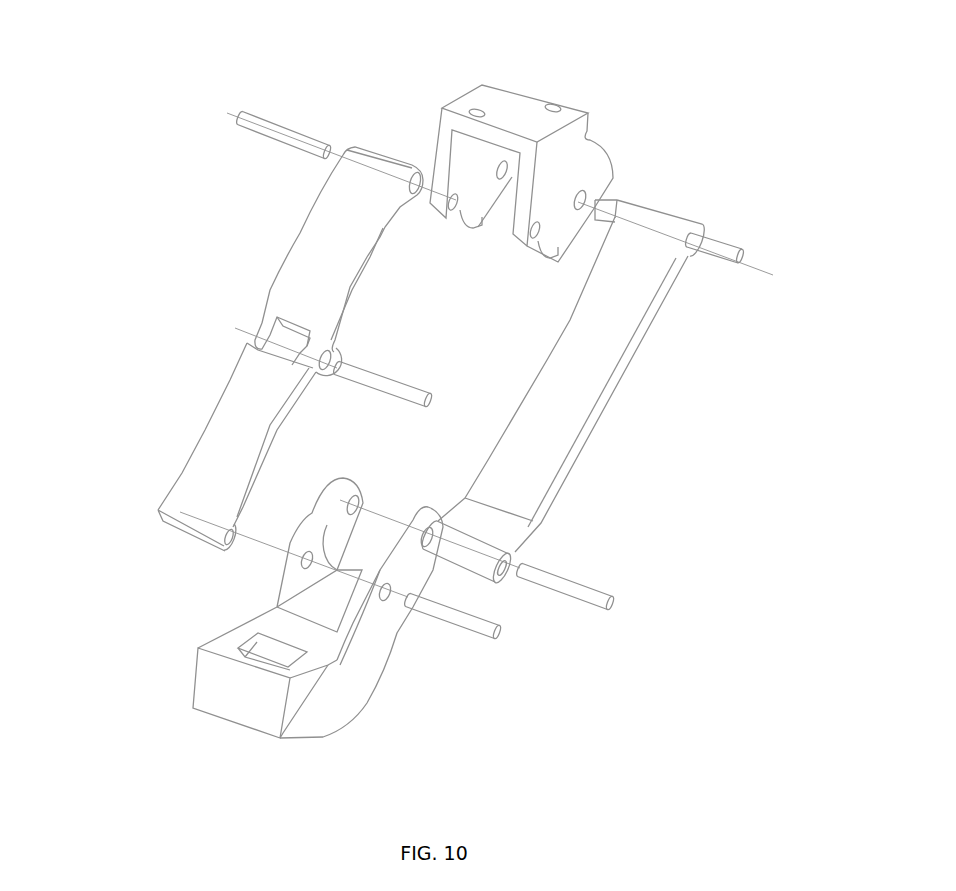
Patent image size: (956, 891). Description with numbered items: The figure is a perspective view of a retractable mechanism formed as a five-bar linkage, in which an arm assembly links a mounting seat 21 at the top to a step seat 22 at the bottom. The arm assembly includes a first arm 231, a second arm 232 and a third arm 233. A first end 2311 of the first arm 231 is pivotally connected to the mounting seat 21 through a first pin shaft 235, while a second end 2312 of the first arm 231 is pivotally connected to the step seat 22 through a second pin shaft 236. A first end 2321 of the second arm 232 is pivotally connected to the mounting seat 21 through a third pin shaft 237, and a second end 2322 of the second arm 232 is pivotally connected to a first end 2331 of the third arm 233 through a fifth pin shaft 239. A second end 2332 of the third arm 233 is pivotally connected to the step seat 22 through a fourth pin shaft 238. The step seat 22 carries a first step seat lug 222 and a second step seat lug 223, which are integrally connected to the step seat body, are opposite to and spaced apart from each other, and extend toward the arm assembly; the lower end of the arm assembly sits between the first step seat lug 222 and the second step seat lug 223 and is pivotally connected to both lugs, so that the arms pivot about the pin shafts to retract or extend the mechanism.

The mounting seat 21 is at (488, 84).
The step seat 22 is at (333, 620).
The first step seat lug 222 is at (332, 520).
The second step seat lug 223 is at (400, 567).
The first arm 231 is at (577, 392).
The first end of the first arm 2311 is at (653, 237).
The second end of the first arm 2312 is at (488, 550).
The second arm 232 is at (315, 220).
The first end of the second arm 2321 is at (370, 165).
The second end of the second arm 2322 is at (262, 326).
The third arm 233 is at (227, 447).
The first end of the third arm 2331 is at (281, 354).
The second end of the third arm 2332 is at (167, 520).
The first pin shaft 235 is at (728, 248).
The second pin shaft 236 is at (567, 593).
The third pin shaft 237 is at (300, 138).
The fourth pin shaft 238 is at (450, 620).
The fifth pin shaft 239 is at (363, 372).